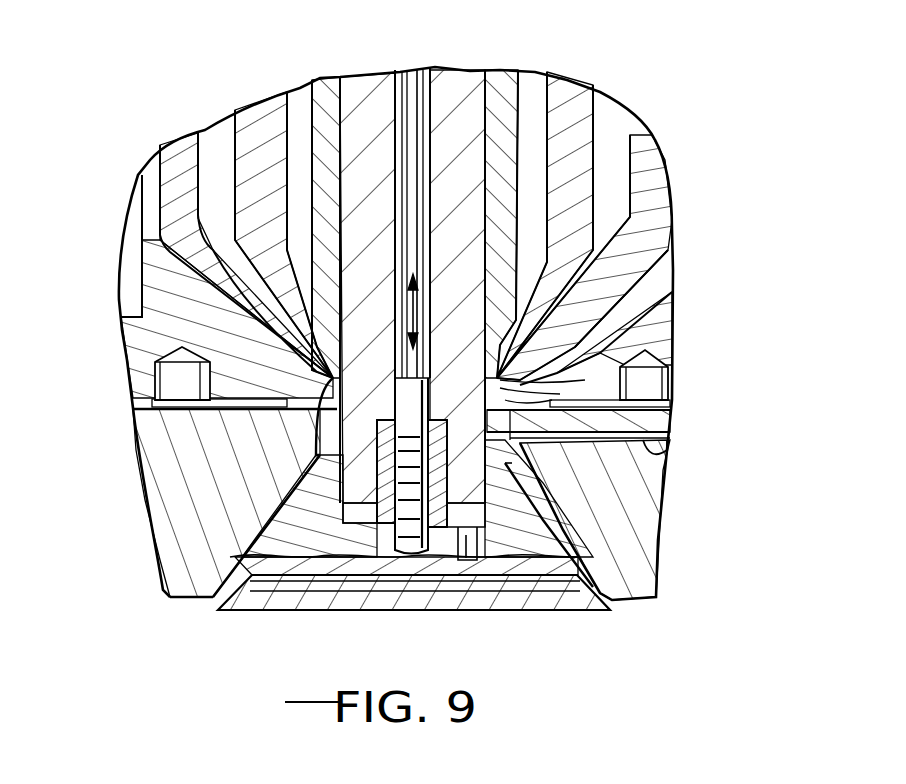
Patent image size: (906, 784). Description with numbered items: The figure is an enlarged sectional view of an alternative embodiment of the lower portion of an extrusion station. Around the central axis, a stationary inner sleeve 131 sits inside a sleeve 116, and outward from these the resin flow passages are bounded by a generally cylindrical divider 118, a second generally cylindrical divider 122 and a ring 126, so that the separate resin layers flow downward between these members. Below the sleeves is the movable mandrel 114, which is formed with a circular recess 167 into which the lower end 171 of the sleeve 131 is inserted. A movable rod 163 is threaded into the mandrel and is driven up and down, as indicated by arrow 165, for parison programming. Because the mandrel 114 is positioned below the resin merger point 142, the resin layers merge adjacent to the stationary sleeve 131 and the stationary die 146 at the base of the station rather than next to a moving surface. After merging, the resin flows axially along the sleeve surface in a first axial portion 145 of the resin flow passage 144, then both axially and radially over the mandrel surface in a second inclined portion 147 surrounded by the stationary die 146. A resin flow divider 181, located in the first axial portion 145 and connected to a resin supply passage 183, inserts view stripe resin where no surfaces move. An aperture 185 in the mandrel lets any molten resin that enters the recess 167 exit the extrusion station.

The movable mandrel 114 is at (590, 605).
The sleeve 116 is at (298, 100).
The divider 118 is at (575, 130).
The divider 122 is at (645, 220).
The ring 126 is at (655, 303).
The stationary inner sleeve 131 is at (360, 93).
The resin merger point 142 is at (316, 425).
The resin flow passage 144 is at (505, 463).
The first axial portion 145 is at (515, 400).
The stationary die 146 is at (173, 442).
The second inclined portion 147 is at (550, 512).
The movable rod 163 is at (405, 70).
The arrow 165 is at (427, 298).
The circular recess 167 is at (352, 540).
The lower end 171 is at (535, 600).
The resin flow divider 181 is at (495, 402).
The resin supply passage 183 is at (662, 455).
The aperture 185 is at (480, 560).